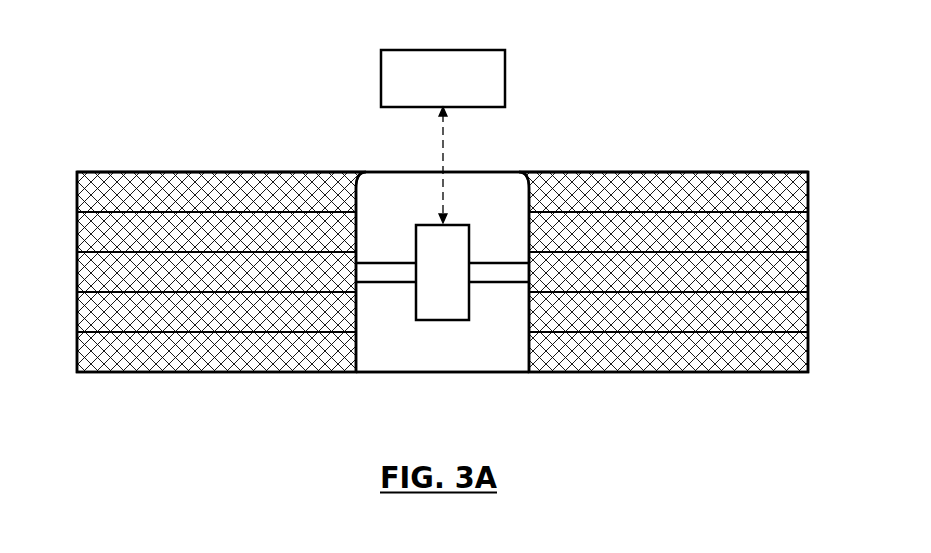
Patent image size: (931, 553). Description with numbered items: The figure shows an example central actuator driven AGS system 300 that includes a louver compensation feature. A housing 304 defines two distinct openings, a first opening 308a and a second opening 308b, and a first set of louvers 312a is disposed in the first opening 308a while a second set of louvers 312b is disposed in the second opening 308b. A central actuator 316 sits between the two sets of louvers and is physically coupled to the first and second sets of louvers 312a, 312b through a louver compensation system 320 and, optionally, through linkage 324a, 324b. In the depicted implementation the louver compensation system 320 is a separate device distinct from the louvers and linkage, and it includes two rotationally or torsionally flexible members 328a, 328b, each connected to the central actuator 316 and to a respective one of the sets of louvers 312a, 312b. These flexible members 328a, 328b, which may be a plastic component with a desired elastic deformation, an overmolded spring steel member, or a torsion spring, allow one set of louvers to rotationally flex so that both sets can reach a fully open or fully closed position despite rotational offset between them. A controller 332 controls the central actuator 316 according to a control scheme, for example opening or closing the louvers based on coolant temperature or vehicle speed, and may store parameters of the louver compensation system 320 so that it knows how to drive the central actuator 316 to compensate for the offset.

The central actuator driven AGS system 300 is at (186, 437).
The housing 304 is at (510, 372).
The first opening 308a is at (77, 212).
The second opening 308b is at (808, 212).
The first set of louvers 312a is at (204, 162).
The second set of louvers 312b is at (667, 163).
The central actuator 316 is at (442, 322).
The louver compensation system 320 is at (391, 308).
The first linkage 324a is at (368, 172).
The second linkage 324b is at (516, 172).
The first rotationally flexible member 328a is at (385, 261).
The second rotationally flexible member 328b is at (507, 261).
The controller 332 is at (443, 49).